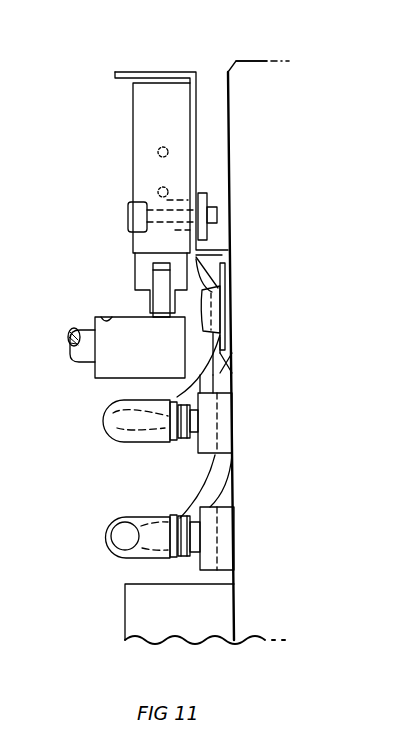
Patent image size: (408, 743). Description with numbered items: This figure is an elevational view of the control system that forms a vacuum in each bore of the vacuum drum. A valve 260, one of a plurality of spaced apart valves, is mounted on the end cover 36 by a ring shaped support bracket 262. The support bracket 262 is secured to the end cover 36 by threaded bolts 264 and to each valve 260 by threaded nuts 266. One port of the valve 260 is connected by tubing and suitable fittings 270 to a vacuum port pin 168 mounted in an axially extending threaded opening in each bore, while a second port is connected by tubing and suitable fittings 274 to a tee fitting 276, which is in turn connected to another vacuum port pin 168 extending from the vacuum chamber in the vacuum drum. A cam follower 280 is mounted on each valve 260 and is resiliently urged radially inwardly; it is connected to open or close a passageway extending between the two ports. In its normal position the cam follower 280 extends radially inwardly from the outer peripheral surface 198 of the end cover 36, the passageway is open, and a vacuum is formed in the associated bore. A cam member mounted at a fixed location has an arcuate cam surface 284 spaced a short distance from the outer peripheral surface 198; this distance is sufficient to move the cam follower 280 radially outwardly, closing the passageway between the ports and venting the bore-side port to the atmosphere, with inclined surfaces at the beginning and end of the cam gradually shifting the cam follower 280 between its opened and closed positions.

The end cover 36 is at (255, 117).
The outer peripheral surface 198 is at (250, 66).
The valve 260 is at (178, 120).
The support bracket 262 is at (197, 98).
The threaded bolt 264 is at (213, 302).
The threaded nut 266 is at (203, 193).
The fitting 270 is at (205, 372).
The fitting 274 is at (212, 492).
The tee fitting 276 is at (140, 518).
The cam follower 280 is at (160, 287).
The arcuate cam surface 284 is at (103, 318).
The vacuum port pin 168 is at (193, 428).